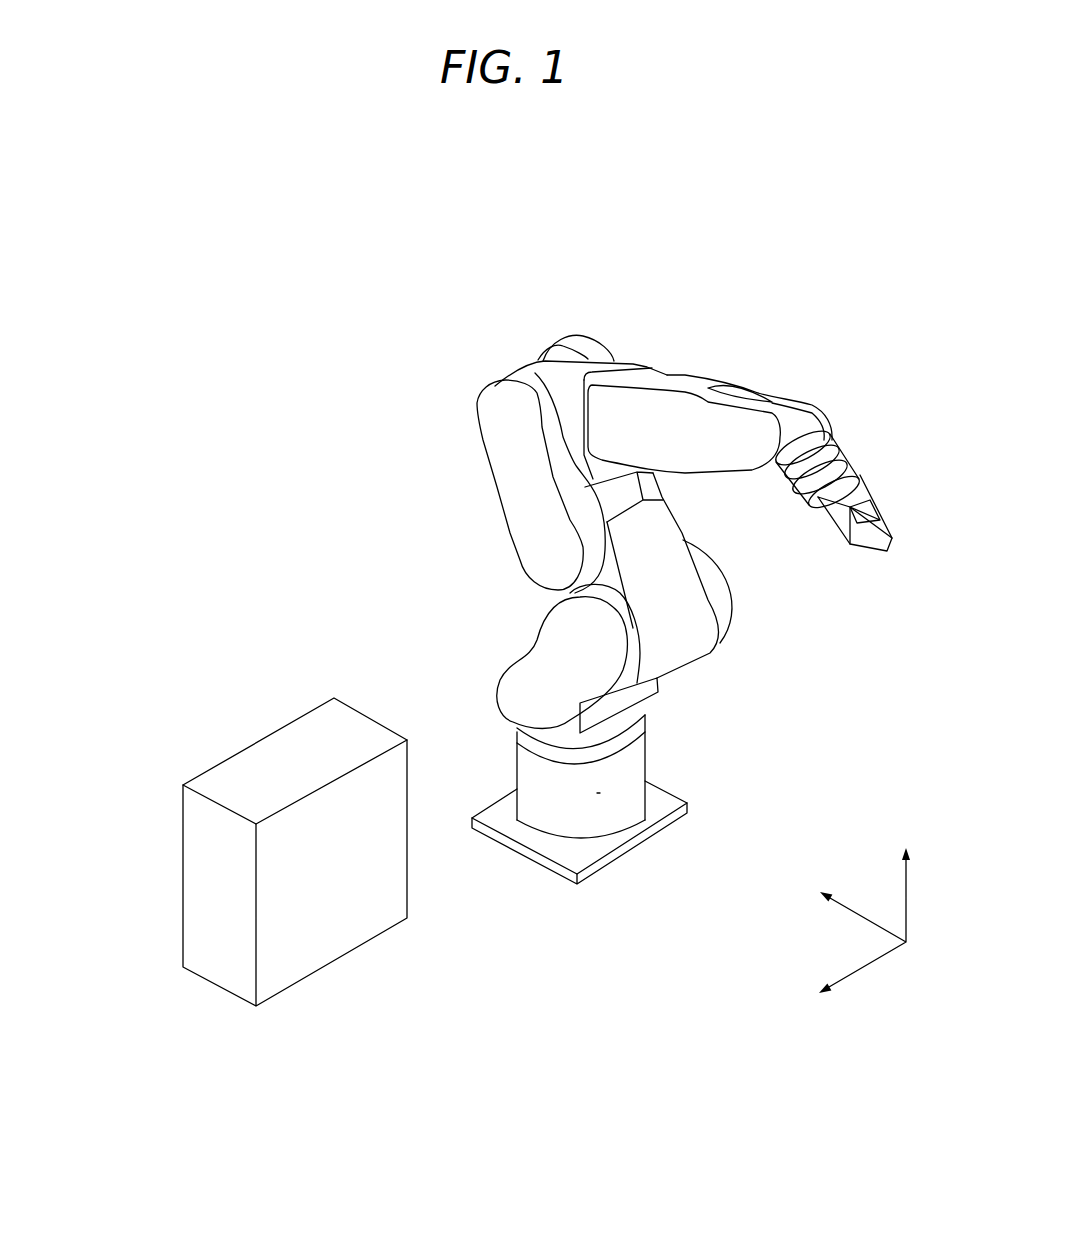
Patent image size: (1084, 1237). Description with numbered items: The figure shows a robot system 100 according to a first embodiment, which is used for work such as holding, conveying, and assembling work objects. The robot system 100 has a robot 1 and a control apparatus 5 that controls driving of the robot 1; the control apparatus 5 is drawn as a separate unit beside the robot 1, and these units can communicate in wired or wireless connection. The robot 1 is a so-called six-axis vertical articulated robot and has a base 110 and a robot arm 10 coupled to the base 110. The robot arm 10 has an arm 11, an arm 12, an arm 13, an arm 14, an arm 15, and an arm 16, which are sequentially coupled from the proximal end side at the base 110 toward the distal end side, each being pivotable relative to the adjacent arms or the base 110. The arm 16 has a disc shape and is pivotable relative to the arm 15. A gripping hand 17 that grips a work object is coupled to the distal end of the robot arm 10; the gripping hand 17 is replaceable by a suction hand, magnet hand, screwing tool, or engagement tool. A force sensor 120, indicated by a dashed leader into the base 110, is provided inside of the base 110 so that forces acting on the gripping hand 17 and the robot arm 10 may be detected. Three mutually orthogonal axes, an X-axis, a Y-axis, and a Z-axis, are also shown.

The robot system 100 is at (738, 223).
The robot 1 is at (530, 353).
The robot arm 10 is at (626, 353).
The arm 11 is at (523, 688).
The arm 12 is at (523, 490).
The arm 13 is at (517, 360).
The arm 14 is at (607, 425).
The arm 15 is at (803, 412).
The arm 16 is at (778, 475).
The gripping hand 17 is at (843, 518).
The base 110 is at (547, 805).
The force sensor 120 is at (597, 793).
The control apparatus 5 is at (222, 782).